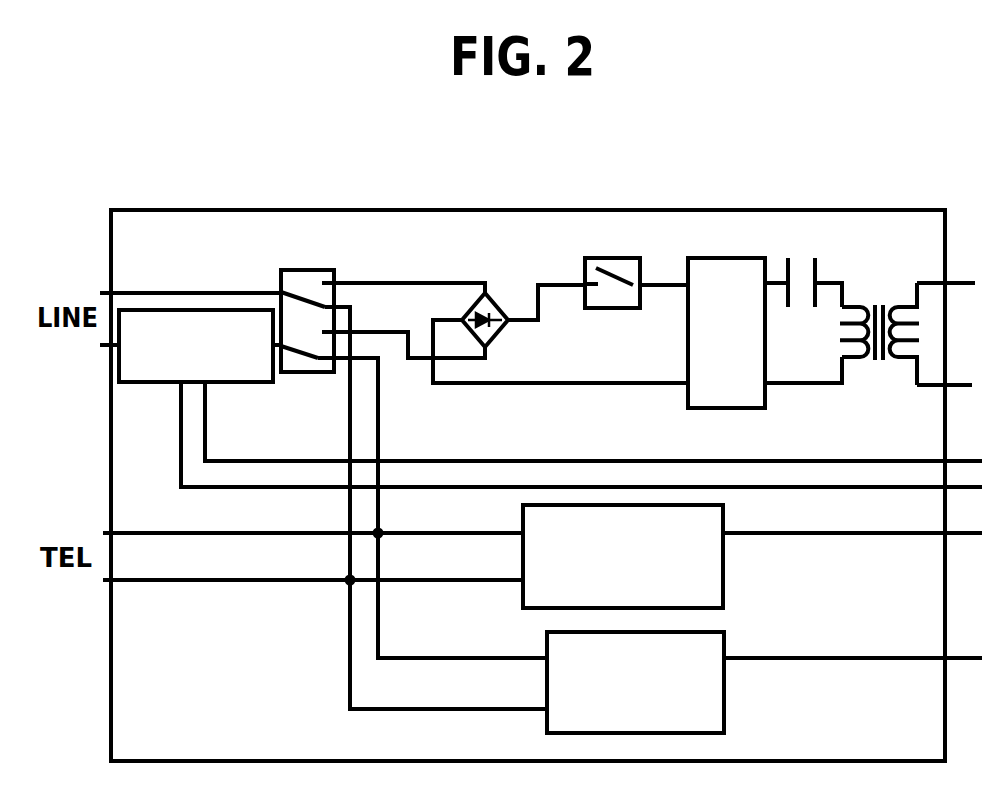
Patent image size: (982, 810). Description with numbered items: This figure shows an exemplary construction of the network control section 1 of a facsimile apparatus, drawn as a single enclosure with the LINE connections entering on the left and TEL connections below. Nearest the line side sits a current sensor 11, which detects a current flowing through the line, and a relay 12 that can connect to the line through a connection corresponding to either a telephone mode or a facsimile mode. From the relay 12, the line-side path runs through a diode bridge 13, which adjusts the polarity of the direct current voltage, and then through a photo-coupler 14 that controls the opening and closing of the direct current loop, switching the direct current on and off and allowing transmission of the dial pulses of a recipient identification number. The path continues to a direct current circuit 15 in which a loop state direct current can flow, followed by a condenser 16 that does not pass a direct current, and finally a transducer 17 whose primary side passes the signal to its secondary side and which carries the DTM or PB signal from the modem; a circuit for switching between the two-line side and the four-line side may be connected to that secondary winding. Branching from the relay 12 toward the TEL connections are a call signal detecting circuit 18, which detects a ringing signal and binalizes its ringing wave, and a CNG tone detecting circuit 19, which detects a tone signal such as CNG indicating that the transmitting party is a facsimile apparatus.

The network control section 1 is at (783, 206).
The current sensor 11 is at (225, 386).
The relay 12 is at (320, 266).
The diode bridge 13 is at (500, 328).
The photo-coupler 14 is at (613, 308).
The direct current circuit 15 is at (735, 278).
The condenser 16 is at (815, 263).
The transducer 17 is at (880, 300).
The call signal detecting circuit 18 is at (723, 588).
The CNG tone detecting circuit 19 is at (725, 690).